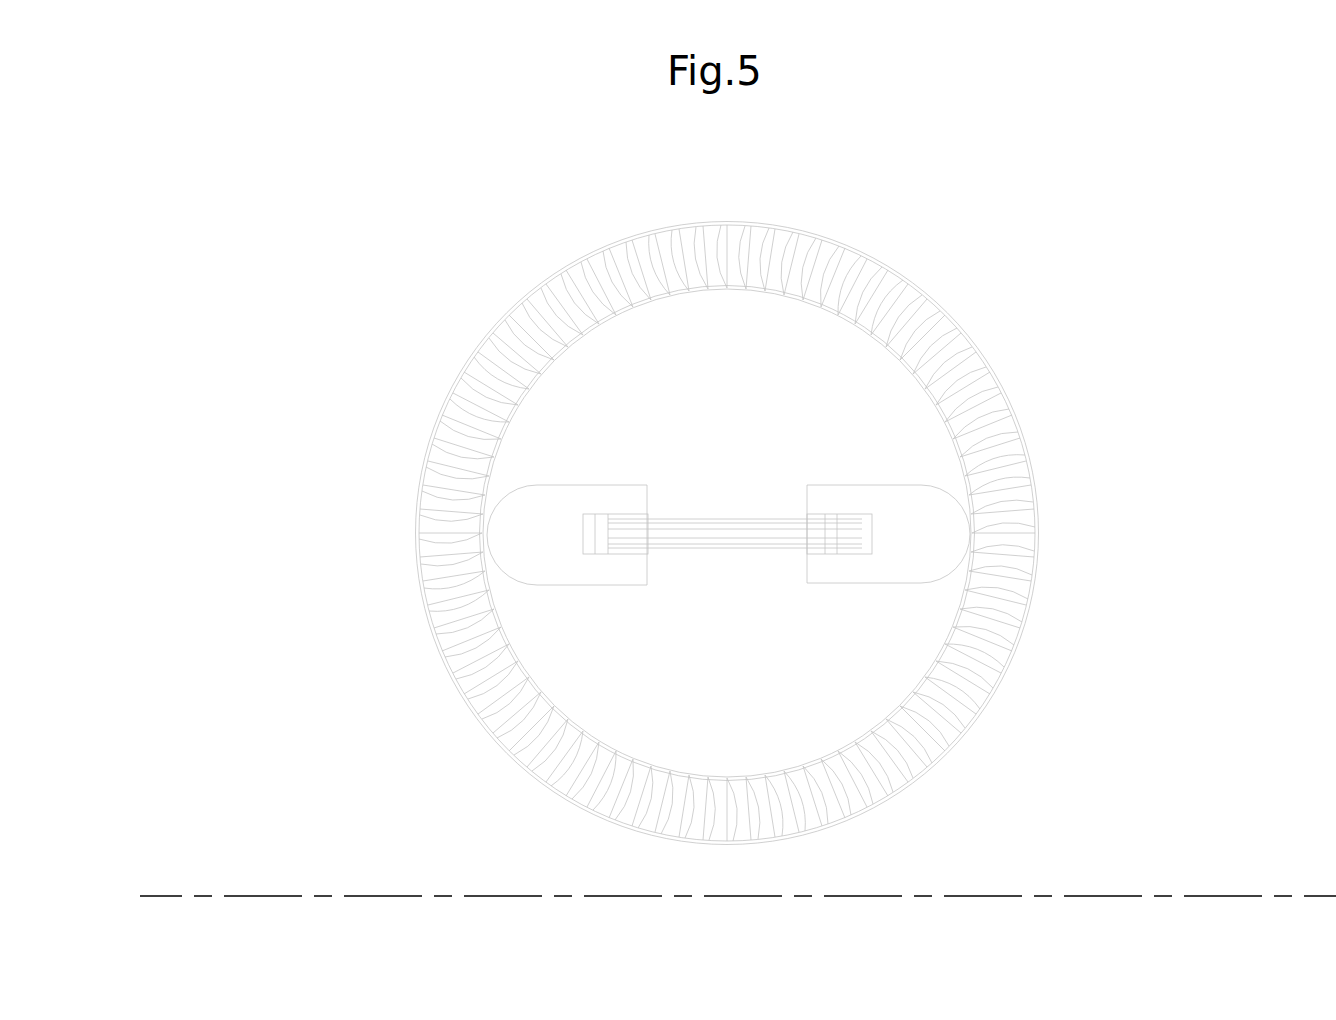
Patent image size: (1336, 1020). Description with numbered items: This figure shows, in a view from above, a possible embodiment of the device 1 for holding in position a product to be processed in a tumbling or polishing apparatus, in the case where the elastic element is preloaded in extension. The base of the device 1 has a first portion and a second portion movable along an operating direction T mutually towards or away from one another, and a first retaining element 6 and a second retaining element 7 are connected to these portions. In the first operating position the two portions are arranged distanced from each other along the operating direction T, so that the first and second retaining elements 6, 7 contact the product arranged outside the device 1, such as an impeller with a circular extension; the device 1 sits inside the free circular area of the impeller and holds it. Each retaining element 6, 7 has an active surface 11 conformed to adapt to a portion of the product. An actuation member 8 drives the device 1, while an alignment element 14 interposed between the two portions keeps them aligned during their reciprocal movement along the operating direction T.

The device 1 is at (824, 458).
The first retaining element 6 is at (527, 519).
The second retaining element 7 is at (895, 566).
The actuation member 8 is at (848, 533).
The active surface 11 is at (498, 573).
The alignment element 14 is at (357, 697).
The operating direction T is at (182, 896).